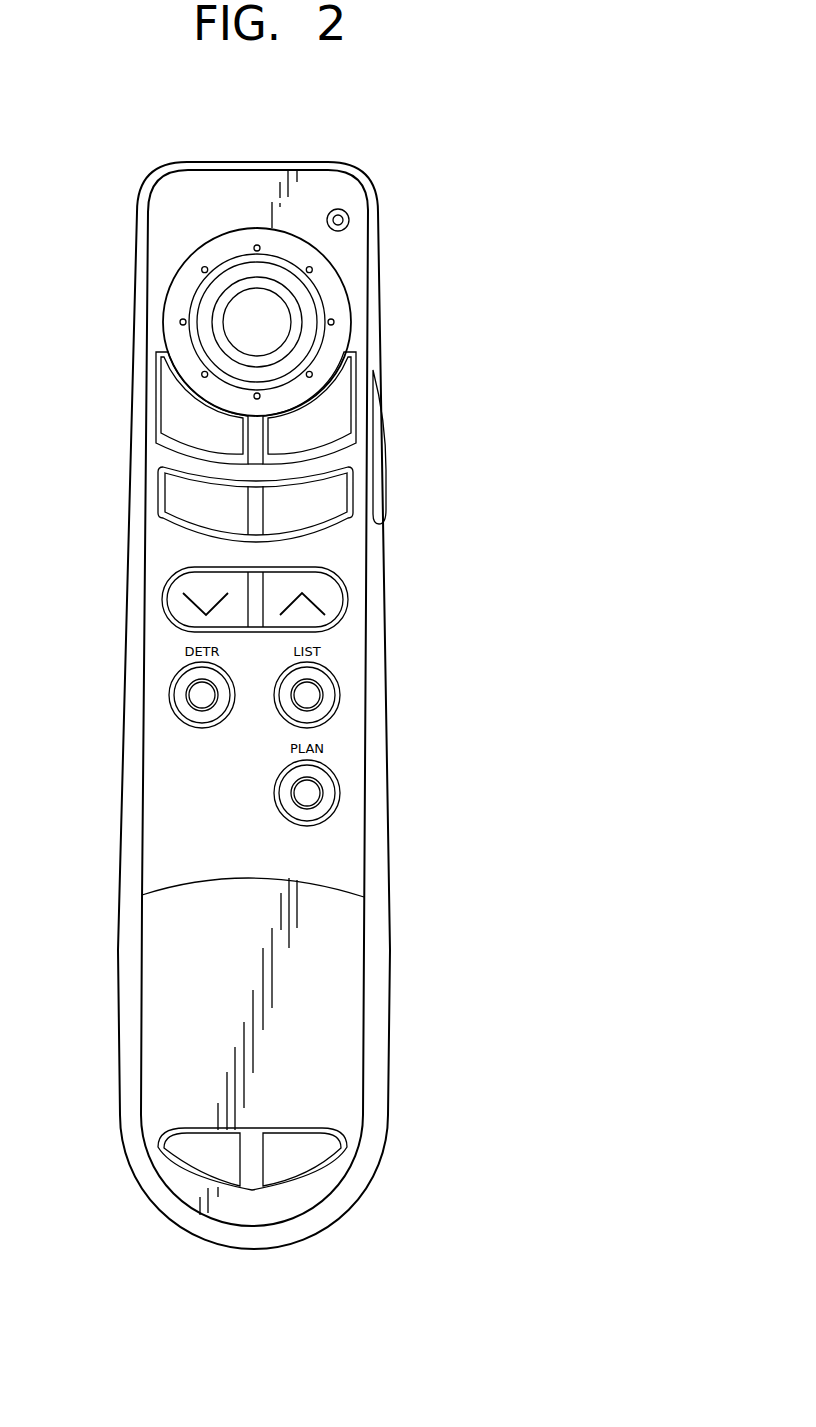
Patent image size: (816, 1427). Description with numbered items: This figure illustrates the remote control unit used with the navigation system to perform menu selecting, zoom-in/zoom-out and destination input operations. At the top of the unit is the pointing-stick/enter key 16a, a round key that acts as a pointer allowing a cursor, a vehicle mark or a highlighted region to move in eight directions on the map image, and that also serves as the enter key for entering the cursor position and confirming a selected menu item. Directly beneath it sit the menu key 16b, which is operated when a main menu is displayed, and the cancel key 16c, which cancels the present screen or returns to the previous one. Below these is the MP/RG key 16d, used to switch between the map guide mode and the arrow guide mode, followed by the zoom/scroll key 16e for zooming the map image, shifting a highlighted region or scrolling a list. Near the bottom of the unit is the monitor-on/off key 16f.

The pointing-stick/enter key 16a is at (258, 308).
The menu key 16b is at (172, 407).
The cancel key 16c is at (338, 412).
The MP/RG key 16d is at (338, 497).
The zoom/scroll key 16e is at (332, 598).
The monitor-on/off key 16f is at (253, 1172).